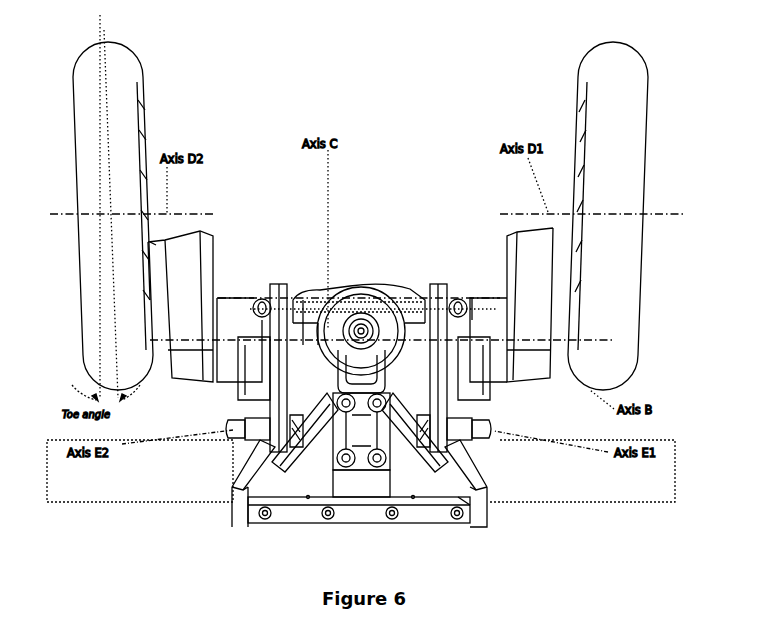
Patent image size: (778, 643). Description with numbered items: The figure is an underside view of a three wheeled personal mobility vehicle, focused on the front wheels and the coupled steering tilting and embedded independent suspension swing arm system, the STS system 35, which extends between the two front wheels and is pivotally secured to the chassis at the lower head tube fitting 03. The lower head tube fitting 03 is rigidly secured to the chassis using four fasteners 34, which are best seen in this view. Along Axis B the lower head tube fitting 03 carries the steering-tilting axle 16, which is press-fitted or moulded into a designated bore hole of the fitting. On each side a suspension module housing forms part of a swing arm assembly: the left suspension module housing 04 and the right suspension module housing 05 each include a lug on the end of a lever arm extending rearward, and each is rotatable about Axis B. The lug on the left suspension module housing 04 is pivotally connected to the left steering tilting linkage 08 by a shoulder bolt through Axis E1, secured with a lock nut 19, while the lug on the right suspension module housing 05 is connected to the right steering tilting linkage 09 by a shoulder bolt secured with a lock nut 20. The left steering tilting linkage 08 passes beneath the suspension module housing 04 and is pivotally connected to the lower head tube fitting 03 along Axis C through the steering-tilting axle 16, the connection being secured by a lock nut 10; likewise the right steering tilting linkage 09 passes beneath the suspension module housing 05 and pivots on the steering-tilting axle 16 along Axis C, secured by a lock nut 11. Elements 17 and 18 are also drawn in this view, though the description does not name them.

The lower head tube fitting 03 is at (368, 291).
The left suspension module housing 04 is at (480, 375).
The right suspension module housing 05 is at (262, 372).
The left steering tilting linkage 08 is at (437, 284).
The right steering tilting linkage 09 is at (277, 284).
The lock nut 10 is at (460, 299).
The lock nut 11 is at (262, 299).
The steering-tilting axle 16 is at (310, 286).
The right support arm 17 is at (483, 467).
The left support arm 18 is at (232, 465).
The lock nut 19 is at (492, 447).
The lock nut 20 is at (228, 440).
The fasteners 34 is at (374, 462).
The coupled swingable rotatable and shock absorbing system (STS system) 35 is at (386, 286).